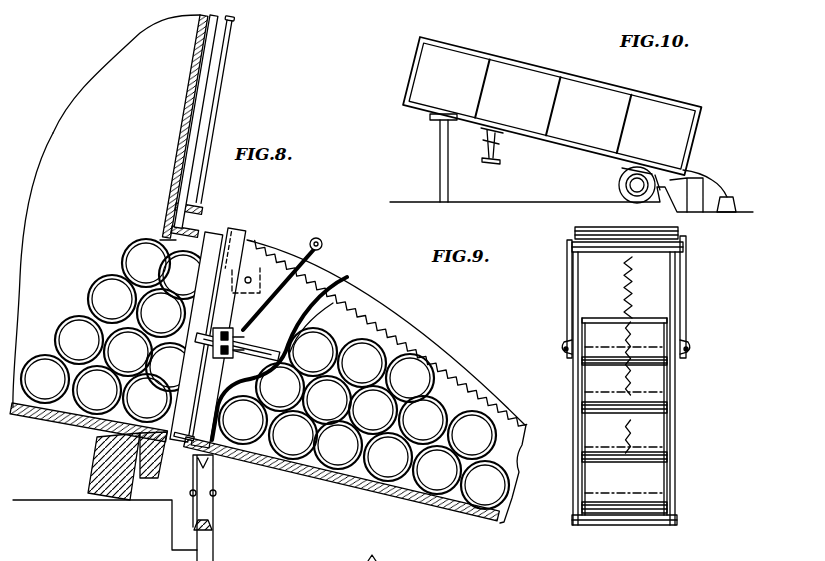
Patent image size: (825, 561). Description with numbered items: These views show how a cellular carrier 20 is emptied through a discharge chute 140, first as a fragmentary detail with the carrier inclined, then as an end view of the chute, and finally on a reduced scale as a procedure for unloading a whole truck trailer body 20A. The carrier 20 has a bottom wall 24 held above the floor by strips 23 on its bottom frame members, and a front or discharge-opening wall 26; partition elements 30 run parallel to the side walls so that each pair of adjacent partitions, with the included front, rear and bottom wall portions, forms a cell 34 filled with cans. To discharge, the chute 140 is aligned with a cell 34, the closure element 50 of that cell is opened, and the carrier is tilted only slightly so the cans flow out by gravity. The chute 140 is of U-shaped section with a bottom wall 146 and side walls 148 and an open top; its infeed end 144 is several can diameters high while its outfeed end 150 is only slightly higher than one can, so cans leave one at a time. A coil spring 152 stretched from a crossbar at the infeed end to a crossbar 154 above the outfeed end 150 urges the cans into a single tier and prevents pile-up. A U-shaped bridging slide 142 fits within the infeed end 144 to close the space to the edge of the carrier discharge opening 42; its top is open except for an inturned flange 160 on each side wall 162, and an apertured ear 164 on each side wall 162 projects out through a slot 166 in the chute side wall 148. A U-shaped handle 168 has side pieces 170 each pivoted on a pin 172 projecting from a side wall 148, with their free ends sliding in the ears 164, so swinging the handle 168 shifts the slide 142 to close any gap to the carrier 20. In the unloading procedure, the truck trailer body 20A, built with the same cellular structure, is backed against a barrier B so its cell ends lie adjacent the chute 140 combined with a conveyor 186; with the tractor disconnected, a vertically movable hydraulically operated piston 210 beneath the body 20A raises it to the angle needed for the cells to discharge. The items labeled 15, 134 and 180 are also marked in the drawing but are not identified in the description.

In FIG. 9, the cargo pipe 15 is at (626, 342).
In FIG. 8, the carrier 20 is at (196, 97).
In FIG. 10, the truck trailer body 20A is at (533, 44).
In FIG. 8, the strips 23 is at (95, 463).
In FIG. 8, the bottom wall 24 is at (37, 425).
In FIG. 8, the front or discharge-opening wall 26 is at (183, 79).
In FIG. 8, the partition elements 30 is at (106, 67).
In FIG. 8, the cell 34 is at (66, 151).
In FIG. 8, the carrier discharge opening 42 is at (159, 231).
In FIG. 8, the closure element 50 is at (226, 62).
In FIG. 8, the base 134 is at (398, 558).
In FIG. 8, the discharge chute 140 is at (328, 279).
In FIG. 10, the discharge chute 140 is at (697, 167).
In FIG. 9, the discharge chute 140 is at (648, 382).
In FIG. 8, the bridging slide 142 is at (215, 240).
In FIG. 8, the infeed end 144 is at (197, 272).
In FIG. 8, the bottom wall 146 is at (367, 483).
In FIG. 9, the bottom wall 146 is at (672, 524).
In FIG. 9, the side walls 148 is at (573, 396).
In FIG. 9, the outfeed end 150 is at (667, 501).
In FIG. 8, the coil spring 152 is at (398, 340).
In FIG. 9, the crossbar 154 is at (665, 456).
In FIG. 9, the inturned flange 160 is at (602, 255).
In FIG. 8, the side wall 162 is at (203, 413).
In FIG. 9, the side wall 162 is at (670, 285).
In FIG. 8, the apertured ear 164 is at (244, 338).
In FIG. 9, the apertured ear 164 is at (565, 345).
In FIG. 8, the slot 166 is at (333, 305).
In FIG. 8, the handle 168 is at (319, 242).
In FIG. 9, the handle 168 is at (573, 240).
In FIG. 8, the side pieces 170 is at (313, 268).
In FIG. 9, the side pieces 170 is at (569, 306).
In FIG. 8, the pin 172 is at (251, 277).
In FIG. 8, the channel 180 is at (214, 516).
In FIG. 10, the conveyor 186 is at (733, 196).
In FIG. 10, the hydraulically operated piston 210 is at (440, 157).
In FIG. 10, the barrier B is at (660, 144).